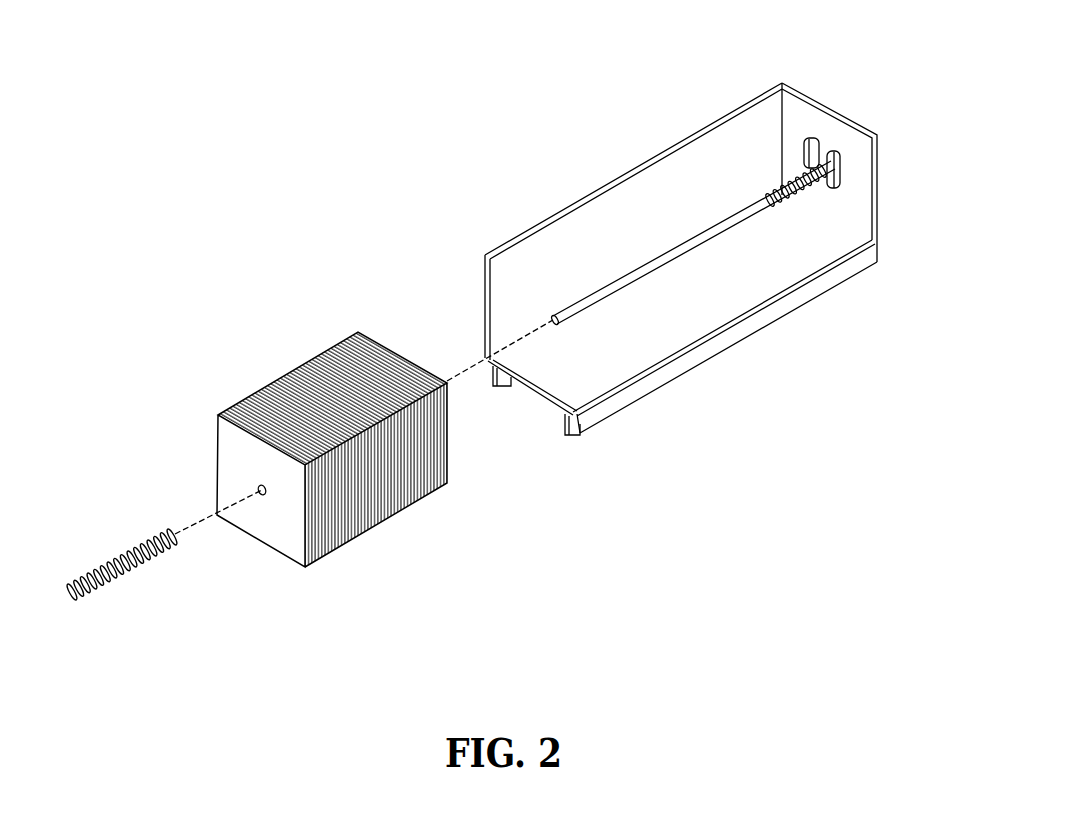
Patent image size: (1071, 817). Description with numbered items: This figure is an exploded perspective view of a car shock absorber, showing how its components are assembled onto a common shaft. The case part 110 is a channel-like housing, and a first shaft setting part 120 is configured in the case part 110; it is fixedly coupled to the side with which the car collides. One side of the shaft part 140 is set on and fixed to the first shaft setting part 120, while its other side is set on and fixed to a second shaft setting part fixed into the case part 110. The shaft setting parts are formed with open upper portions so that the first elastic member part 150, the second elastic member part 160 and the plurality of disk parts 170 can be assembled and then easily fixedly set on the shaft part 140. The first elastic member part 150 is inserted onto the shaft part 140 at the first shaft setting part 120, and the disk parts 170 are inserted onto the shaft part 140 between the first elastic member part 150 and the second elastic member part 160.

The case part 110 is at (725, 120).
The first shaft setting part 120 is at (840, 163).
The shaft part 140 is at (672, 252).
The first elastic member part 150 is at (135, 575).
The second elastic member part 160 is at (785, 197).
The disk parts 170 is at (377, 507).